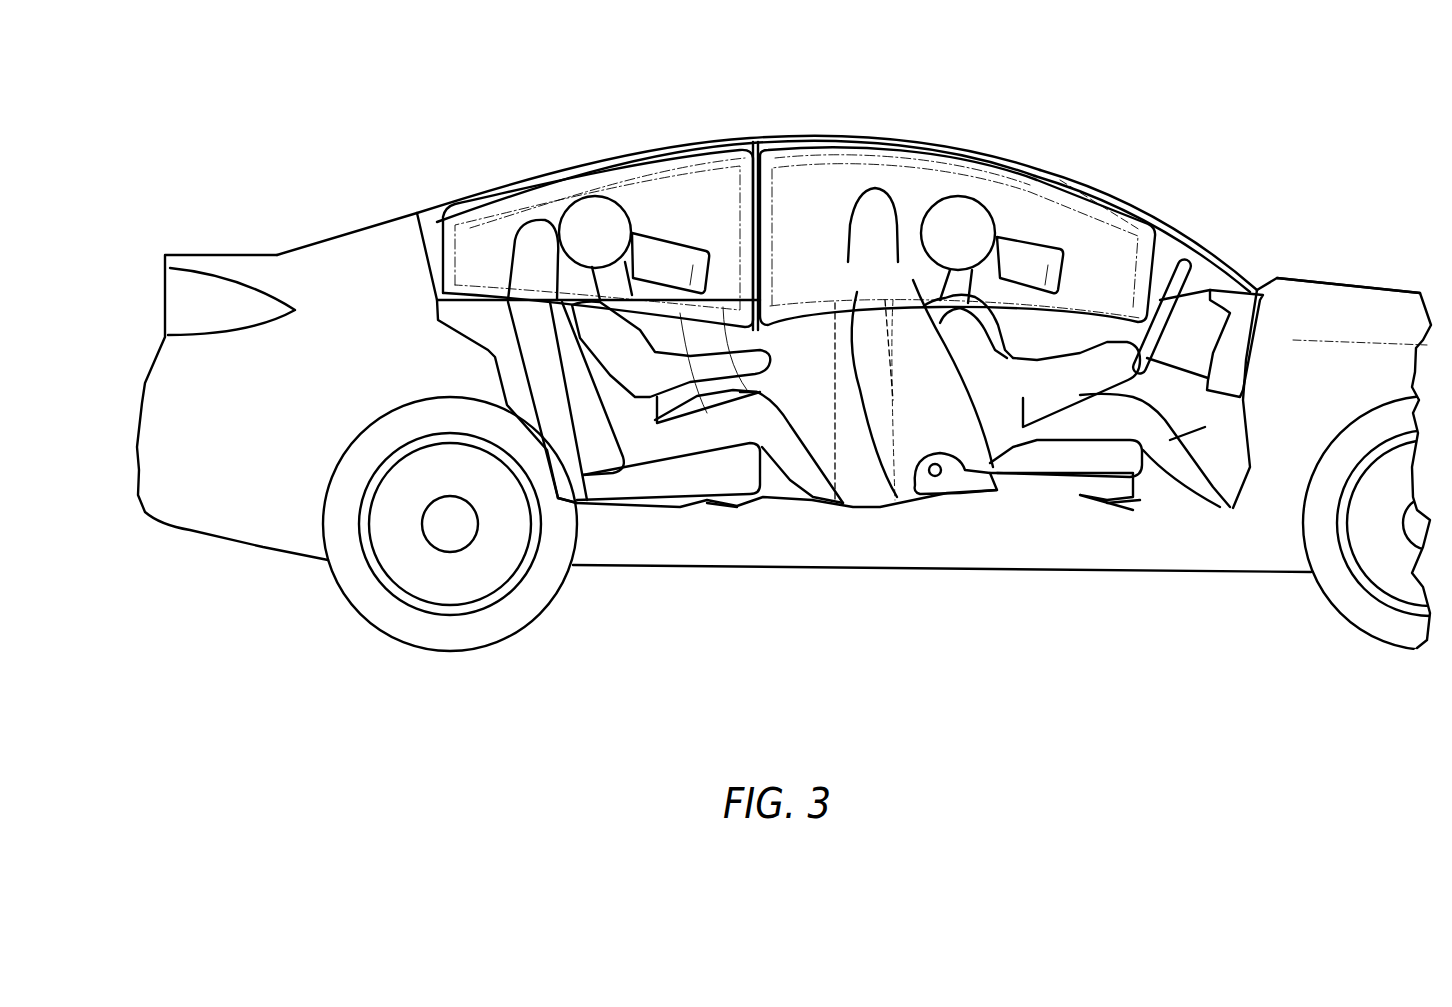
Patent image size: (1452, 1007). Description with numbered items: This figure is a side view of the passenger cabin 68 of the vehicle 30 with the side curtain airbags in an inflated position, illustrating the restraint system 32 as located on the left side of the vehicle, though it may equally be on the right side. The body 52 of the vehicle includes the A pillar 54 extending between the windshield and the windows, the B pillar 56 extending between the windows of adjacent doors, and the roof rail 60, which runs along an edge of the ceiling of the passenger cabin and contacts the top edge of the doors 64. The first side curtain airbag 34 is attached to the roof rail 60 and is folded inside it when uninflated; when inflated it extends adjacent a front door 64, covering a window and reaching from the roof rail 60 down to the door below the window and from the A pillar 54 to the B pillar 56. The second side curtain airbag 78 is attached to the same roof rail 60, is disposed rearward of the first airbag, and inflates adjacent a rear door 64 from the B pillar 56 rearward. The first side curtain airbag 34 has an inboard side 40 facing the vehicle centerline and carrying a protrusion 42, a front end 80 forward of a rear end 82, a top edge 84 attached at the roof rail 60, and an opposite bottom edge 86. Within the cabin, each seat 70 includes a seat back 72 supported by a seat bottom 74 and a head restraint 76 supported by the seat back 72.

The vehicle 30 is at (1274, 70).
The restraint system 32 is at (1092, 133).
The first side curtain airbag 34 is at (1038, 316).
The inboard side 40 is at (748, 395).
The protrusion 42 is at (665, 235).
The body 52 is at (1348, 272).
The A pillar 54 is at (1170, 230).
The B pillar 56 is at (835, 360).
The roof rail 60 is at (892, 140).
The door 64 is at (895, 447).
The passenger cabin 68 is at (1072, 215).
The seat 70 is at (908, 485).
The seat back 72 is at (557, 377).
The seat bottom 74 is at (718, 505).
The head restraint 76 is at (525, 218).
The second side curtain airbag 78 is at (734, 138).
The front end 80 is at (760, 188).
The rear end 82 is at (440, 270).
The top edge 84 is at (657, 152).
The bottom edge 86 is at (680, 400).